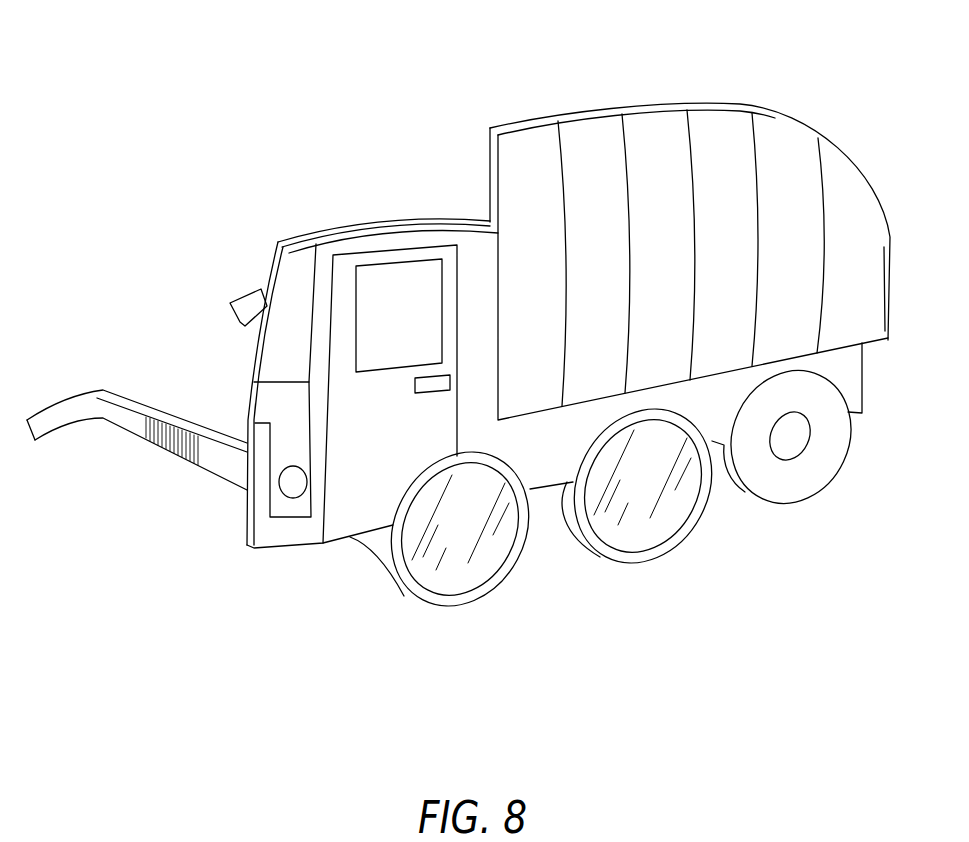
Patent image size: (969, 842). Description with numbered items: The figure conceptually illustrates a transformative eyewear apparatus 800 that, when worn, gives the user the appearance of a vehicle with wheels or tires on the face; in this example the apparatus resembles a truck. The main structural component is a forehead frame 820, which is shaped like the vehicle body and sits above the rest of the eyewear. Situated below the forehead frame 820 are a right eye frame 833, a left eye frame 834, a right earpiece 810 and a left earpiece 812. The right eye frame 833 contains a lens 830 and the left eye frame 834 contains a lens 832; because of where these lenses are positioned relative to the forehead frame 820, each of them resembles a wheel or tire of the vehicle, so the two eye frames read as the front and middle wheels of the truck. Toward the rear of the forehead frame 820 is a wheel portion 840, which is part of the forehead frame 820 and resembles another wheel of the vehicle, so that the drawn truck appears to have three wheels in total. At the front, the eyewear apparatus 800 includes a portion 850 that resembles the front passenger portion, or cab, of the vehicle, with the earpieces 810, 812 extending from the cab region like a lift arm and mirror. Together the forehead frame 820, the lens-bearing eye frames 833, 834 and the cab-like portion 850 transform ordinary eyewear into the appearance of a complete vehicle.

The eyewear apparatus 800 is at (266, 112).
The right earpiece 810 is at (155, 443).
The left earpiece 812 is at (256, 288).
The forehead frame 820 is at (582, 165).
The lens 830 is at (433, 552).
The lens 832 is at (675, 503).
The right eye frame 833 is at (460, 597).
The left eye frame 834 is at (618, 552).
The rear wheel 840 is at (795, 472).
The portion 850 is at (402, 243).